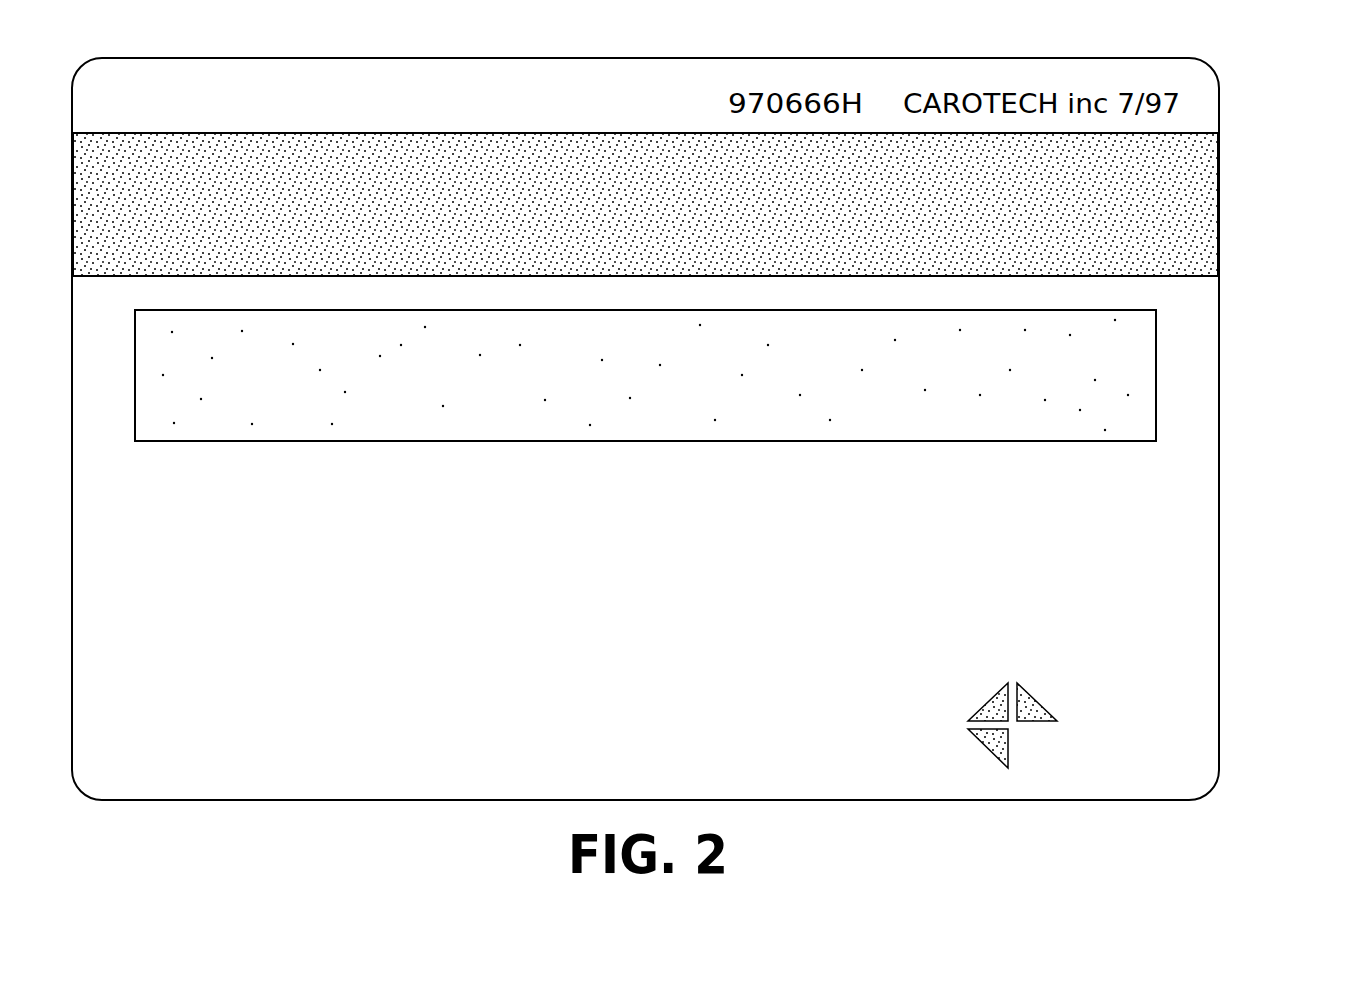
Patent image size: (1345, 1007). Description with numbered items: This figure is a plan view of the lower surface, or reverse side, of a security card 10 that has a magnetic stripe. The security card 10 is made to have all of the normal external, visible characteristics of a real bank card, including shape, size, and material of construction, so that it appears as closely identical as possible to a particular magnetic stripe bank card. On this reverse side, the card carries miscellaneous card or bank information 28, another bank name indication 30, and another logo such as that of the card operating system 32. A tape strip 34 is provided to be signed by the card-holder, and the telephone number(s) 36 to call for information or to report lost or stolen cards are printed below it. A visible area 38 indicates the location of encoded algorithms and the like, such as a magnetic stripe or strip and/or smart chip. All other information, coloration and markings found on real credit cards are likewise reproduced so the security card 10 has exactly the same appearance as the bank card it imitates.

The security card 10 is at (703, 424).
The miscellaneous card or bank information 28 is at (1218, 84).
The visible area 38 is at (1219, 213).
The tape strip 34 is at (1140, 365).
The telephone number(s) 36 is at (1133, 540).
The bank name indication 30 is at (300, 780).
The logo of the card operating system 32 is at (1102, 795).